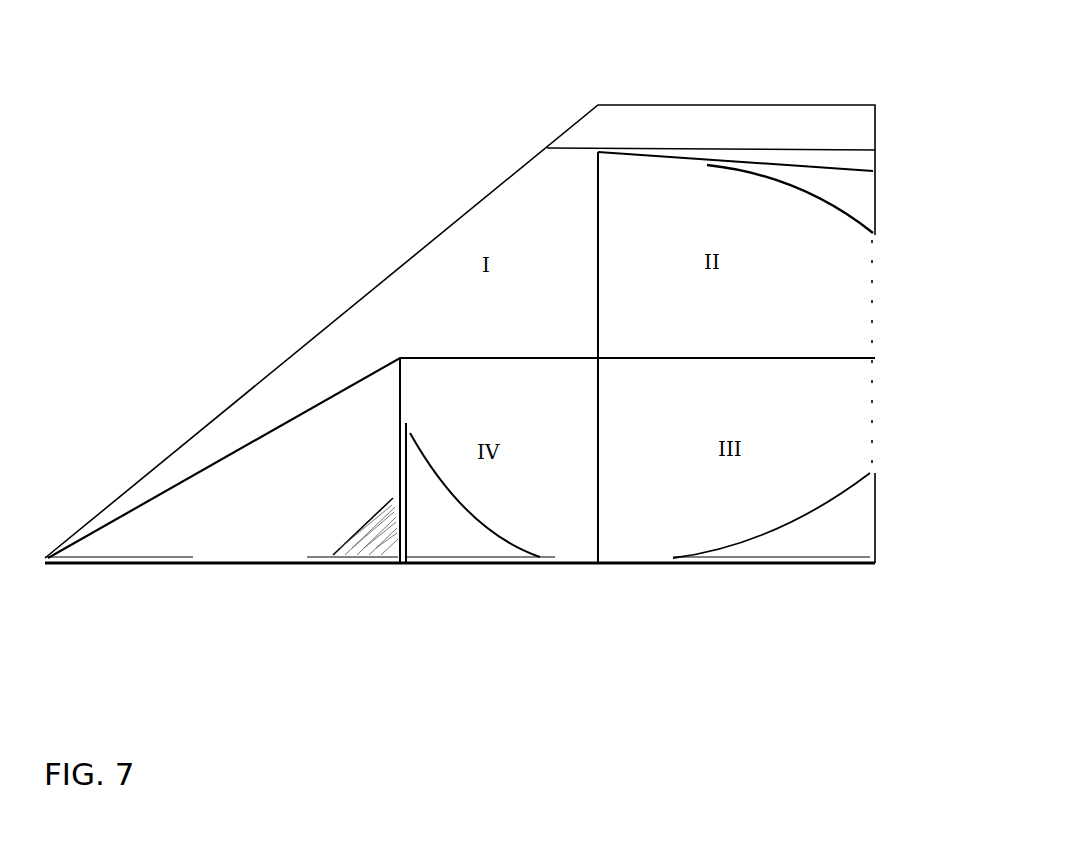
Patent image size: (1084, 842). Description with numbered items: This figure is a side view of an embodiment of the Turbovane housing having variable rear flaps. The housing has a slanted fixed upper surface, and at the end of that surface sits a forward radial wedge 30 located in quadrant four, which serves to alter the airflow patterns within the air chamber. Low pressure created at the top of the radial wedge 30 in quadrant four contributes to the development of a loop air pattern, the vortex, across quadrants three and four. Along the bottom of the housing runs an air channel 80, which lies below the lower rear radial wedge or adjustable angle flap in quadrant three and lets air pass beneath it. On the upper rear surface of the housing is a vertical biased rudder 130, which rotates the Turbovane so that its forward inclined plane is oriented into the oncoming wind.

The vertical biased rudder 130 is at (825, 123).
The radial wedge 30 is at (441, 546).
The air channel 80 is at (172, 570).